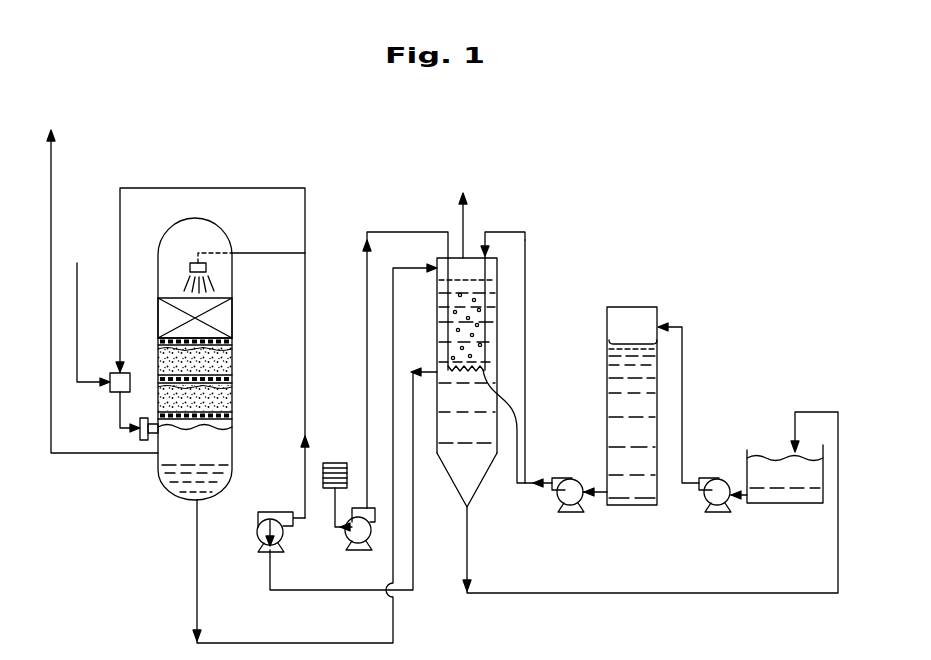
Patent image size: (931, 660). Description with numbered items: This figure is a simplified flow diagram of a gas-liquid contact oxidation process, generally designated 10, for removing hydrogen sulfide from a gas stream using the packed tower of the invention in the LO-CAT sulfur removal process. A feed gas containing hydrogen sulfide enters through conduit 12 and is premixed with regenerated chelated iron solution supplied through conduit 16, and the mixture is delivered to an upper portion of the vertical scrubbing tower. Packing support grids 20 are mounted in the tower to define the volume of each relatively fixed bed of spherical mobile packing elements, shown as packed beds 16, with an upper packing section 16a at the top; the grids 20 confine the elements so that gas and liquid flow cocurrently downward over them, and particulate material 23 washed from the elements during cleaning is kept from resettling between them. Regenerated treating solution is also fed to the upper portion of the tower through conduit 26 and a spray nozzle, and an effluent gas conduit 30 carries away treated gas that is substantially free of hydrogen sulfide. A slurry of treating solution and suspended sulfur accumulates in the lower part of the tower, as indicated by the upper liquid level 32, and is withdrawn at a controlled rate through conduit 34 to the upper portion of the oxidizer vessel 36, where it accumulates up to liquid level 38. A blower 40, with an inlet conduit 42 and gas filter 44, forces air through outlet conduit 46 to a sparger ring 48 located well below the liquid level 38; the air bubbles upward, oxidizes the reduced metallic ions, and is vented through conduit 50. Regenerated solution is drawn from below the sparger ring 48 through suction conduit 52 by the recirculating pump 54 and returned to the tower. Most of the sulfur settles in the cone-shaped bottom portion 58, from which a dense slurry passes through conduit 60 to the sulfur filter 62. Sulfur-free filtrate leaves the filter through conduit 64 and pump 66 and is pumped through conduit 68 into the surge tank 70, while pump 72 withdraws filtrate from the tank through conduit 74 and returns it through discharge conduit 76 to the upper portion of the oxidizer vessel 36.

The sulfur removal process 10 is at (588, 273).
The conduit 12 is at (77, 273).
The conduit 16 is at (222, 362).
The upper packing section 16a is at (225, 318).
The packing support grid 20 is at (232, 340).
The particulate material 23 is at (497, 330).
The conduit 26 is at (292, 253).
The effluent gas conduit 30 is at (93, 453).
The upper liquid level 32 is at (211, 452).
The conduit 34 is at (192, 587).
The oxidizer vessel 36 is at (456, 234).
The upper liquid level 38 is at (480, 276).
The blower 40 is at (352, 550).
The inlet conduit 42 is at (332, 517).
The gas filter 44 is at (340, 463).
The outlet conduit 46 is at (366, 309).
The sparger ring 48 is at (504, 443).
The conduit 50 is at (468, 228).
The suction conduit 52 is at (413, 558).
The recirculating pump 54 is at (257, 523).
The cone-shaped bottom portion 58 is at (477, 488).
The conduit 60 is at (606, 593).
The sulfur filter 62 is at (745, 457).
The conduit 64 is at (740, 496).
The pump 66 is at (722, 479).
The conduit 68 is at (682, 352).
The surge tank 70 is at (607, 390).
The pump 72 is at (572, 478).
The conduit 74 is at (600, 490).
The discharge conduit 76 is at (525, 366).